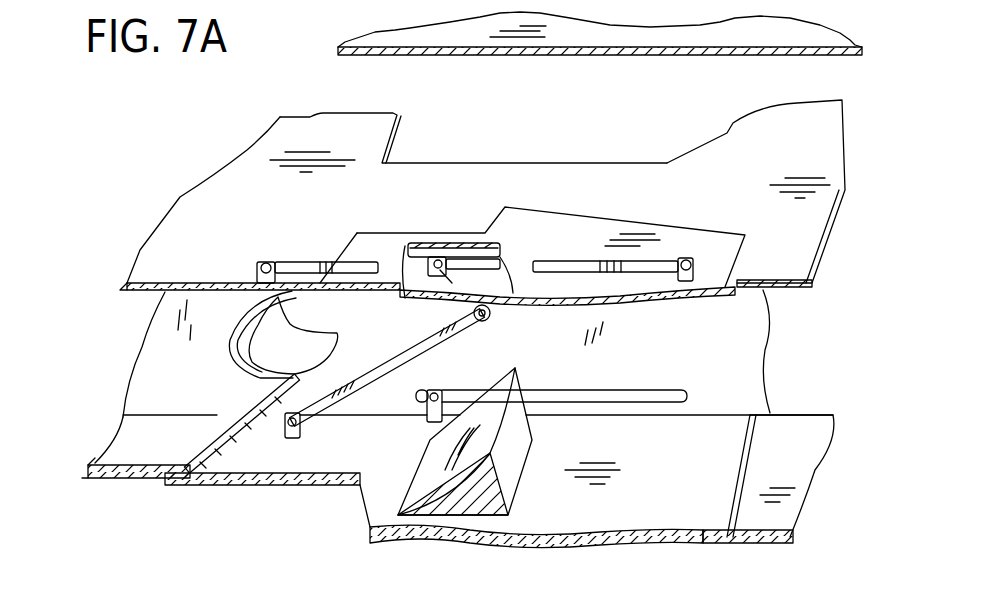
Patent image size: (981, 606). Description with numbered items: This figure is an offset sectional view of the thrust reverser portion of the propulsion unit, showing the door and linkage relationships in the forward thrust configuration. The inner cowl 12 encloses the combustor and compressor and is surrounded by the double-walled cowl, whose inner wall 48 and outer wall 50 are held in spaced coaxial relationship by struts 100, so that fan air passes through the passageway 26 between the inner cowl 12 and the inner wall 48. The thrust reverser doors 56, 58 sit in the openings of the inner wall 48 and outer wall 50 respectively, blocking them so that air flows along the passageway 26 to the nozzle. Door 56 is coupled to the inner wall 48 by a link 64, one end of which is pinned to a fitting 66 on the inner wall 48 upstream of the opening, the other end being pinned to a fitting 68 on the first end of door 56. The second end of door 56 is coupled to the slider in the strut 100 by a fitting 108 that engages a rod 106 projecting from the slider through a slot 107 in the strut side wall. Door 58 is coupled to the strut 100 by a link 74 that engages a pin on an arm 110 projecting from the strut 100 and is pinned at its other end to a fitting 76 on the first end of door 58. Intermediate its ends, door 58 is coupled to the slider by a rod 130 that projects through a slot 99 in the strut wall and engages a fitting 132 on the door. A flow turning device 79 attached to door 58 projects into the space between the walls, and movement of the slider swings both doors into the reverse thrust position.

The inner cowl 12 is at (638, 57).
The passageway 26 is at (798, 137).
The inner wall 48 is at (201, 229).
The outer wall 50 is at (150, 433).
The door 56 is at (630, 238).
The door 58 is at (656, 474).
The link 64 is at (312, 262).
The fitting 66 is at (265, 262).
The fitting 68 is at (689, 256).
The link 74 is at (430, 348).
The fitting 76 is at (285, 425).
The flow turning device 79 is at (447, 462).
The slot 99 is at (568, 393).
The strut 100 is at (707, 333).
The rod 106 is at (440, 270).
The slot 107 is at (470, 255).
The fitting 108 is at (417, 285).
The arm 110 is at (490, 318).
The rod 130 is at (434, 390).
The fitting 132 is at (427, 417).